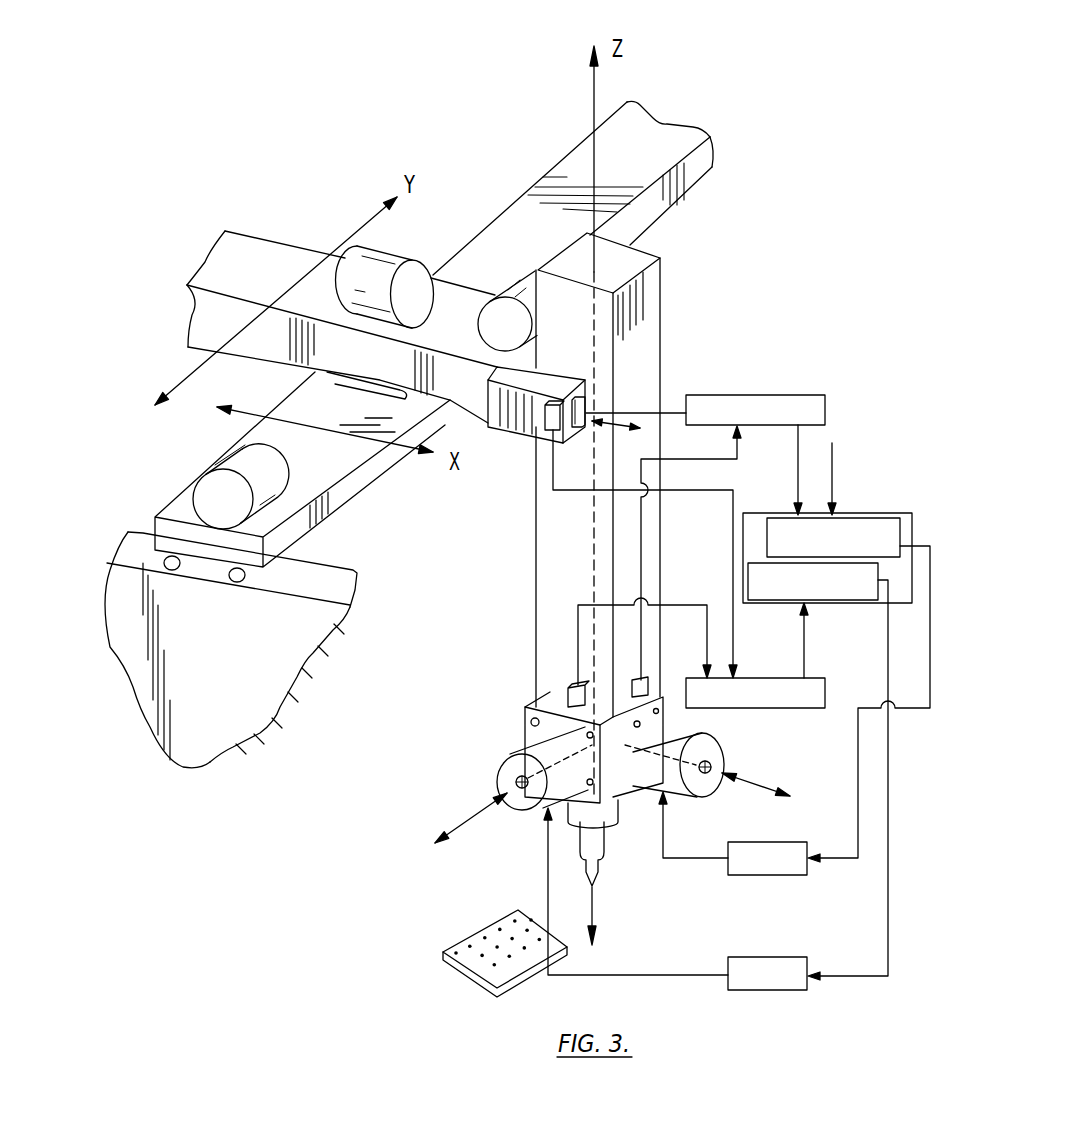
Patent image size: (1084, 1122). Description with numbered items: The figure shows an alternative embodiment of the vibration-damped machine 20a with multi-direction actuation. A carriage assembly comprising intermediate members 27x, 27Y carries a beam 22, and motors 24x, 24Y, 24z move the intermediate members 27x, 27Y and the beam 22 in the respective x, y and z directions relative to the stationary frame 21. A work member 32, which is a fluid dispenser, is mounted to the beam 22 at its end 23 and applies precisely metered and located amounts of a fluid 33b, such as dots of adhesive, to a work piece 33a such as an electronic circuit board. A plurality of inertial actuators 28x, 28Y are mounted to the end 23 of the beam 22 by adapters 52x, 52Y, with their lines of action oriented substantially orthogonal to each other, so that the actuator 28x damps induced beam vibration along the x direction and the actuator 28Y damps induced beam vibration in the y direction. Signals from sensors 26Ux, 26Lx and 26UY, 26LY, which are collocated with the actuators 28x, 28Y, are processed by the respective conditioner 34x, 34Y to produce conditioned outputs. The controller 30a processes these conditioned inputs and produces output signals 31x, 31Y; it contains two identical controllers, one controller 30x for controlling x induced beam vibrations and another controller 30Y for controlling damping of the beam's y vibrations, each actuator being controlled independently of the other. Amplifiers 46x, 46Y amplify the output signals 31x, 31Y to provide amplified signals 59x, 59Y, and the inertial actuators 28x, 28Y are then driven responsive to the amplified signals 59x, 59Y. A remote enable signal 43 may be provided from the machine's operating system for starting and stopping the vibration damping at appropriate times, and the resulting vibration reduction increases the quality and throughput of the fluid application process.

The vibration-damped machine 20a is at (568, 795).
The stationary frame 21 is at (206, 662).
The beam 22 is at (548, 533).
The end of the beam 23 is at (620, 792).
The x motor 24x is at (217, 489).
The y motor 24Y is at (402, 257).
The z motor 24z is at (502, 328).
The upper x sensor 26Ux is at (588, 400).
The upper y sensor 26UY is at (547, 427).
The lower x sensor 26Lx is at (633, 677).
The lower y sensor 26LY is at (567, 690).
The x intermediate member 27x is at (562, 236).
The y intermediate member 27Y is at (258, 284).
The x inertial actuator 28x is at (695, 795).
The y inertial actuator 28Y is at (518, 803).
The controller 30a is at (853, 546).
The x controller 30x is at (903, 534).
The y controller 30Y is at (852, 602).
The x output signal 31x is at (860, 758).
The y output signal 31Y is at (893, 795).
The work member 32 is at (607, 850).
The work piece 33a is at (473, 978).
The fluid 33b is at (483, 940).
The x conditioner 34x is at (787, 395).
The y conditioner 34Y is at (805, 710).
The remote enable signal 43 is at (832, 443).
The x amplifier 46x is at (753, 877).
The y amplifier 46Y is at (743, 992).
The x adapter 52x is at (682, 717).
The y adapter 52Y is at (520, 733).
The x amplified signal 59x is at (690, 860).
The y amplified signal 59Y is at (547, 843).